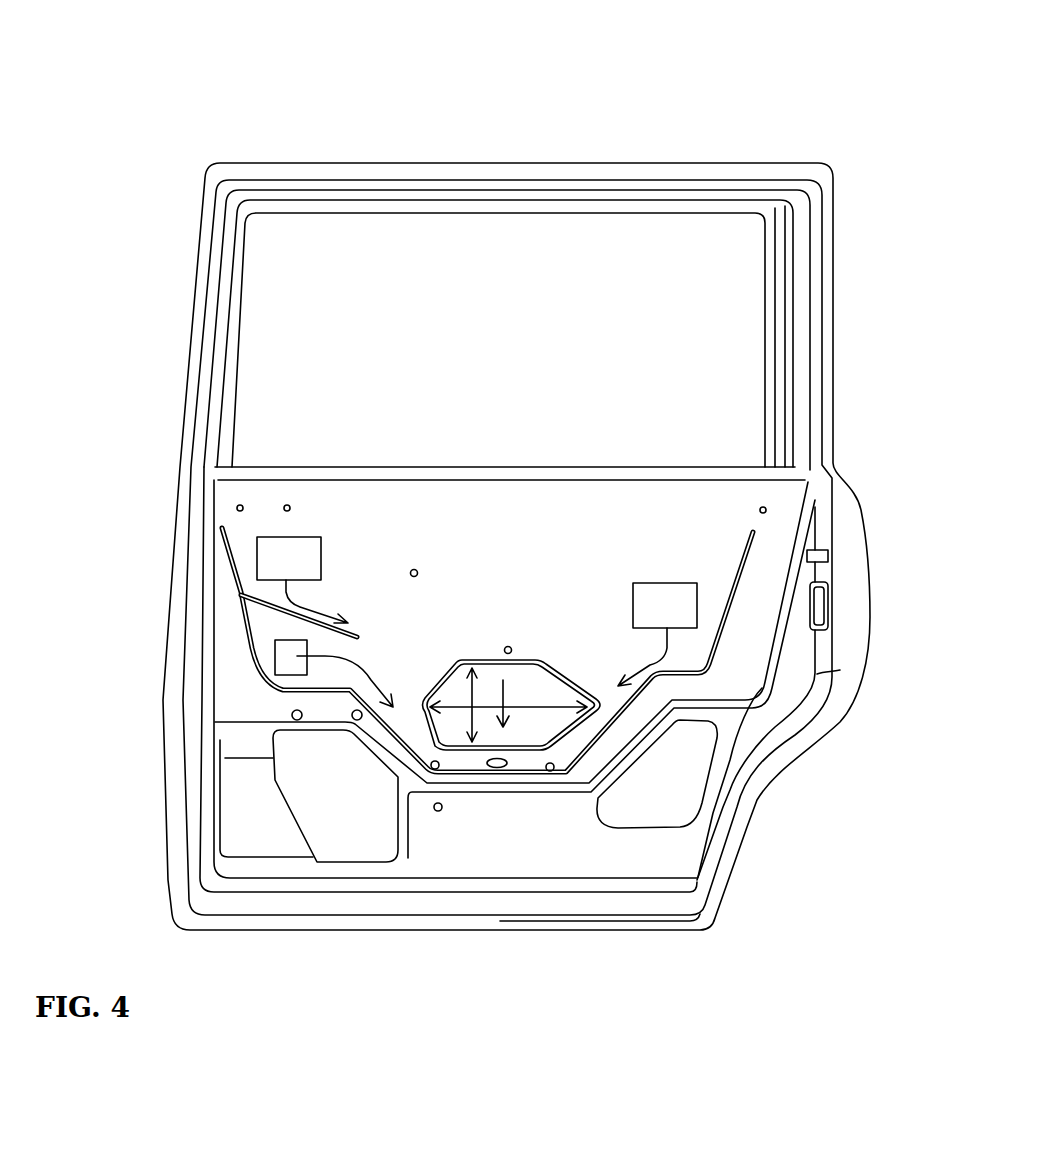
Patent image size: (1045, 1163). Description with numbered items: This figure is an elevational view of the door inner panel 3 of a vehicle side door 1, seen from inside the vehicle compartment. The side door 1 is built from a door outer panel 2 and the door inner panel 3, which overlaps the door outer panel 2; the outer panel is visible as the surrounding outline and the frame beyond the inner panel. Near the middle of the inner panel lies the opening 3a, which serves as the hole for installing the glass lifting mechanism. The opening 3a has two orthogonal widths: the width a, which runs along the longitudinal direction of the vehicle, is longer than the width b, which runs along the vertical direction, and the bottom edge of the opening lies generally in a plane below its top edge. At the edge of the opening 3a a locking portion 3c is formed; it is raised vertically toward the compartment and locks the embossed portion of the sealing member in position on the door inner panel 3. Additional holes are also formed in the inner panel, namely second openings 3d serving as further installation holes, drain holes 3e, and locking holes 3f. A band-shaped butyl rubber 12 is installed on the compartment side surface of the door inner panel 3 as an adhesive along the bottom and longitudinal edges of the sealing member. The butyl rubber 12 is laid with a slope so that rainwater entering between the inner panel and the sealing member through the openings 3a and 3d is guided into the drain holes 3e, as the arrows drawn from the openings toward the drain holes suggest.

The side door 1 is at (774, 110).
The door outer panel 2 is at (870, 566).
The door inner panel 3 is at (820, 672).
The butyl rubber 12 is at (233, 560).
The opening 3a is at (571, 679).
The locking portion 3c is at (533, 659).
The second opening 3d is at (310, 532).
The drain hole 3e is at (434, 770).
The locking hole 3f is at (415, 569).
The width a is at (447, 697).
The width b is at (462, 746).